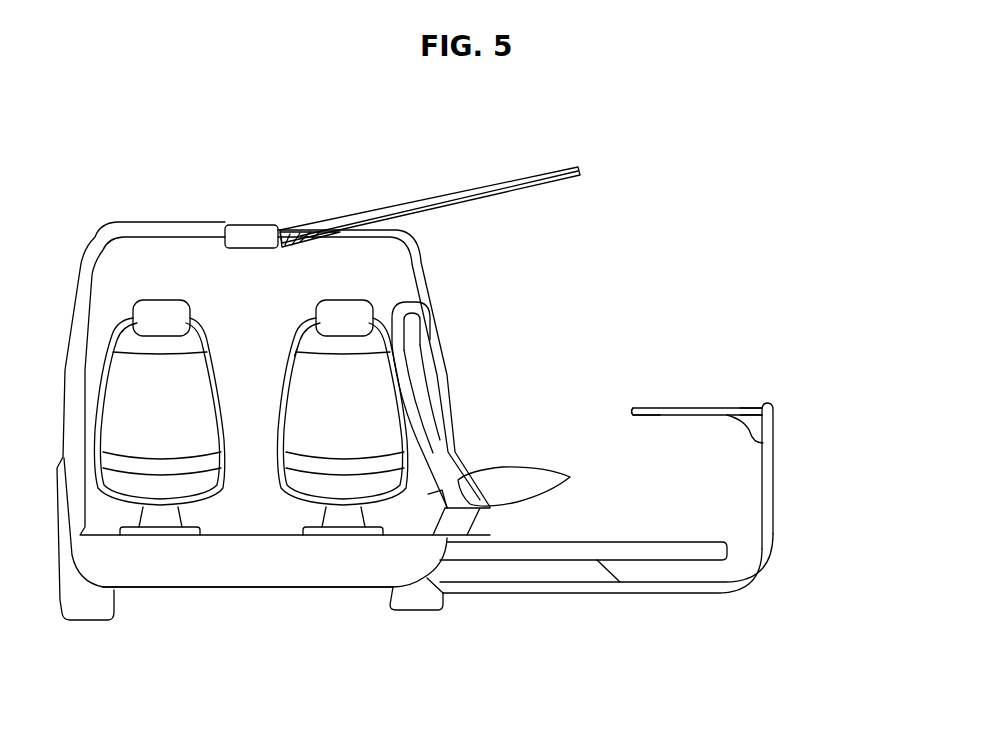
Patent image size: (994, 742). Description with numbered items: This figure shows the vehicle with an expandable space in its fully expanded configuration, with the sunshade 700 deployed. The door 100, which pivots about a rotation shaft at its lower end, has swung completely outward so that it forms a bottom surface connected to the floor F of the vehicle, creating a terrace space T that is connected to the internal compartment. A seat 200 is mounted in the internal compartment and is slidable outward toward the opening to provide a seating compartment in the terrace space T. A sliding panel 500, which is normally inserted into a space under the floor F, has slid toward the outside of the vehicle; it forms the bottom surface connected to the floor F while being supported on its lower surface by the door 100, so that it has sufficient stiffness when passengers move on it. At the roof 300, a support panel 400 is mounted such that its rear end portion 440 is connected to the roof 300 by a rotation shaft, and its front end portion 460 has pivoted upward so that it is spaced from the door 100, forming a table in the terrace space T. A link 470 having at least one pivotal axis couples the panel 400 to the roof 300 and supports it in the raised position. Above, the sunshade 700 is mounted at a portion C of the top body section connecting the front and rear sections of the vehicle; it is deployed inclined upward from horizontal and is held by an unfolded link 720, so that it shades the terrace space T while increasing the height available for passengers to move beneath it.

The door 100 is at (537, 572).
The seat 200 is at (440, 393).
The roof 300 is at (775, 473).
The support panel 400 is at (698, 410).
The rear end portion 440 is at (758, 403).
The front end portion 460 is at (635, 410).
The link 470 is at (763, 443).
The sliding panel 500 is at (660, 550).
The sunshade 700 is at (388, 207).
The link 720 is at (487, 200).
The portion of top body section C is at (258, 230).
The terrace space T is at (580, 428).
The floor F is at (233, 570).